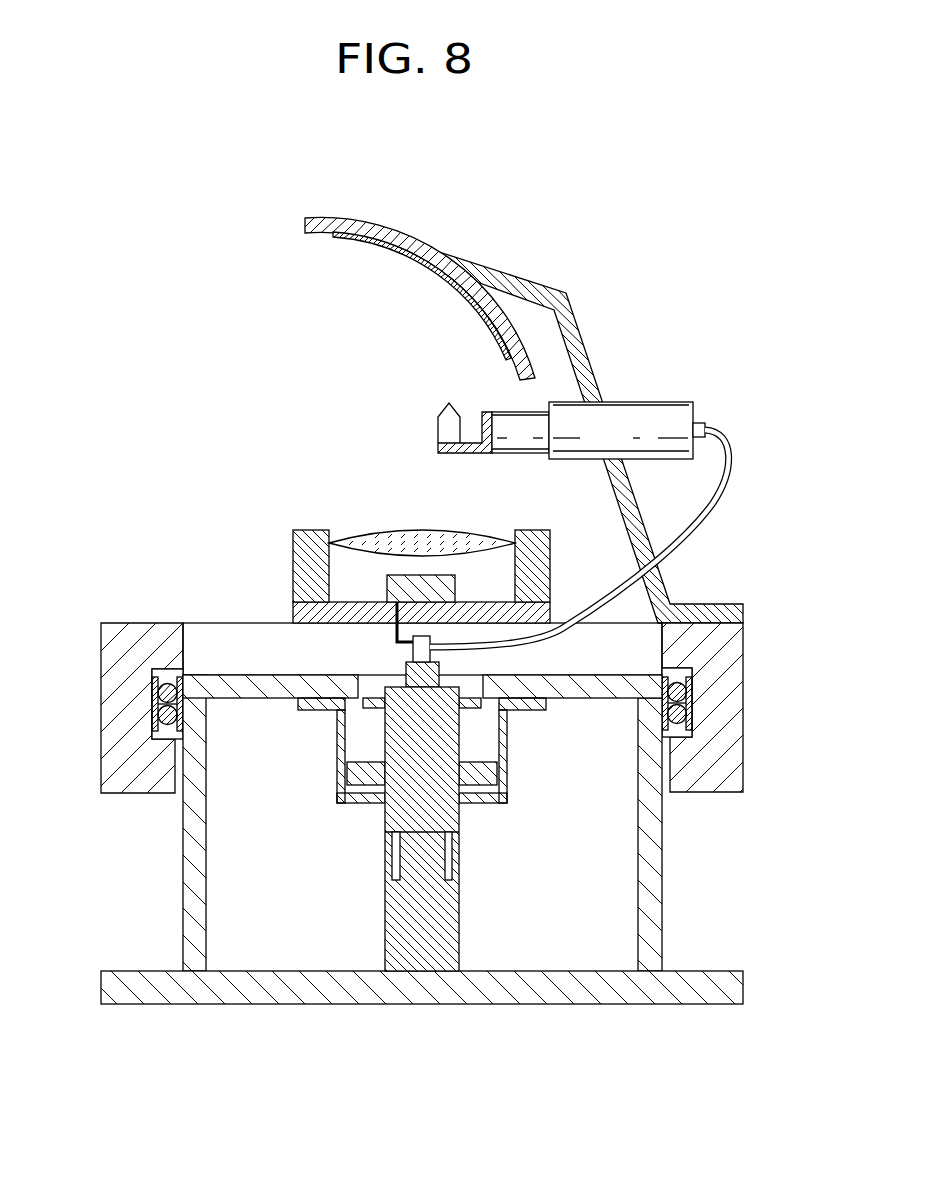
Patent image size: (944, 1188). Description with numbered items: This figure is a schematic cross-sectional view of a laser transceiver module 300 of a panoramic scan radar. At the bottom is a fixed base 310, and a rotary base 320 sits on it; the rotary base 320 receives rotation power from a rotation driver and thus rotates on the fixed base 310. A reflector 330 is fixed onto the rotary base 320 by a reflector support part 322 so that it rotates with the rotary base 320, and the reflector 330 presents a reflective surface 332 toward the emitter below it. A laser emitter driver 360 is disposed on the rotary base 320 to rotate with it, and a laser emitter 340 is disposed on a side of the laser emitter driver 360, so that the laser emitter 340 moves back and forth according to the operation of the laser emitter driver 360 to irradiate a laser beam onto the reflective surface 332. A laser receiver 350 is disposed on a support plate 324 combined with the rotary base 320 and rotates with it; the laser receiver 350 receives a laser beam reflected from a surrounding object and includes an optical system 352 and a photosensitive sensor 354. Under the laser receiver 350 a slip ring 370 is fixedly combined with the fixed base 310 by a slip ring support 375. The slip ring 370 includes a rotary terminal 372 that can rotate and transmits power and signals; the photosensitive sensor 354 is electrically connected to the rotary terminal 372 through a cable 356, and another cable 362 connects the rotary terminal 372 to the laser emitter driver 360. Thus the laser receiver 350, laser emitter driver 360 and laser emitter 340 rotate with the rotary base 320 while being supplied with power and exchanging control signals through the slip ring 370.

The laser transceiver module 300 is at (168, 282).
The fixed base 310 is at (190, 862).
The rotary base 320 is at (133, 630).
The reflector support part 322 is at (548, 293).
The support plate 324 is at (292, 611).
The reflector 330 is at (330, 217).
The reflective surface 332 is at (355, 242).
The laser emitter 340 is at (438, 400).
The laser receiver 350 is at (421, 511).
The lens 352 is at (420, 535).
The photosensitive sensor 354 is at (388, 575).
The cable 356 is at (395, 632).
The laser emitter driver 360 is at (657, 402).
The cable 362 is at (727, 498).
The slip ring 370 is at (447, 738).
The rotary terminal 372 is at (412, 650).
The slip ring support 375 is at (503, 803).